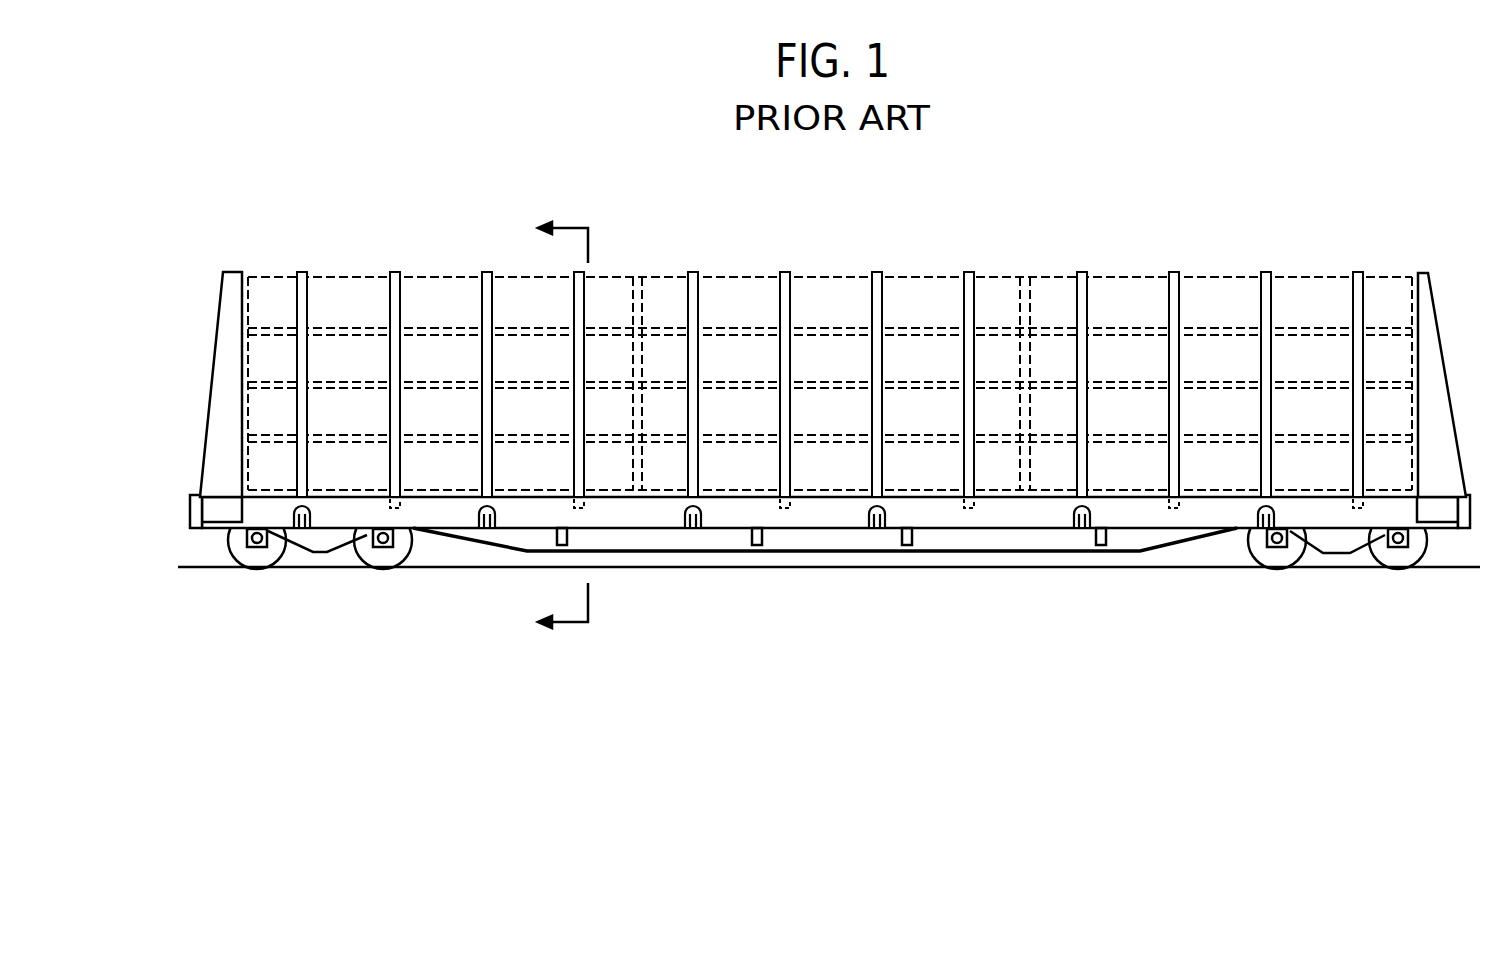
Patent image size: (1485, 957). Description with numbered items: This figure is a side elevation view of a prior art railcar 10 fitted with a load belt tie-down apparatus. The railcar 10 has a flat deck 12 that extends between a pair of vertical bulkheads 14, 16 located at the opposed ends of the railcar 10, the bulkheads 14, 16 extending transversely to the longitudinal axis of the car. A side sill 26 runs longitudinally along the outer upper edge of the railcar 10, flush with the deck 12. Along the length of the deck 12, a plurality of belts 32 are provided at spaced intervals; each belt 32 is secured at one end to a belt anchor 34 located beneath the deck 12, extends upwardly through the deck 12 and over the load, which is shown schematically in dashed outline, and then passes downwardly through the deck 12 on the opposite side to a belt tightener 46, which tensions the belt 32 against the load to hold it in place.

The railcar 10 is at (812, 407).
The flat deck 12 is at (806, 495).
The vertical bulkhead 14 is at (227, 321).
The vertical bulkhead 16 is at (1423, 272).
The side sill 26 is at (944, 513).
The belt 32 is at (303, 272).
The belt anchor 34 is at (584, 505).
The belt tightener 46 is at (307, 526).